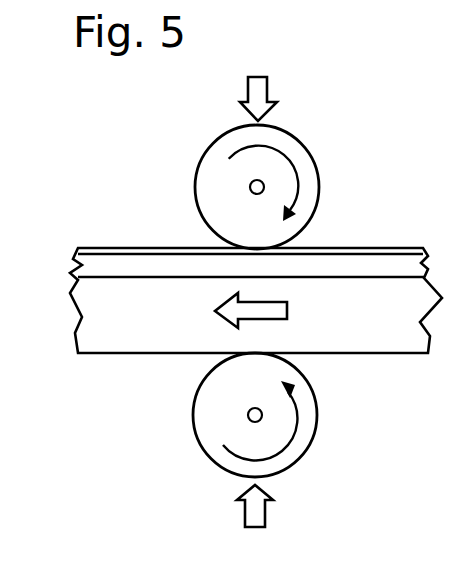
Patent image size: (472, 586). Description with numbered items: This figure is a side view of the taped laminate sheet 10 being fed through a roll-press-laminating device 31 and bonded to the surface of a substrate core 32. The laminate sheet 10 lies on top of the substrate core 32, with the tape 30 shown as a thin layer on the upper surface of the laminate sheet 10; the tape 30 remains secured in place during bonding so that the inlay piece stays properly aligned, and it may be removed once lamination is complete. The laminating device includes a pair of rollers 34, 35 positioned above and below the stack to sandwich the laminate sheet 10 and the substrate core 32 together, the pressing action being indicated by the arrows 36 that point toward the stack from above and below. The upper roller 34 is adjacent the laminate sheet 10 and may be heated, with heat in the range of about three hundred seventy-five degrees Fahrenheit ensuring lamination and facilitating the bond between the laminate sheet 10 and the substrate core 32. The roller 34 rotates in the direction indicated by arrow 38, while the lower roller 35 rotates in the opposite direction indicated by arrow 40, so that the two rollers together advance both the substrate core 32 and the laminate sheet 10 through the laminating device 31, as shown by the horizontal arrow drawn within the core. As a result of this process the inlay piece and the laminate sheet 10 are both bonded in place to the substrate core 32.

The laminate sheet 10 is at (436, 265).
The tape 30 is at (333, 249).
The roll-press-laminating device 31 is at (83, 199).
The substrate core 32 is at (75, 321).
The roller 34 is at (195, 192).
The roller 35 is at (192, 418).
The arrows 36 is at (268, 84).
The arrow 38 is at (298, 172).
The arrow 40 is at (295, 433).